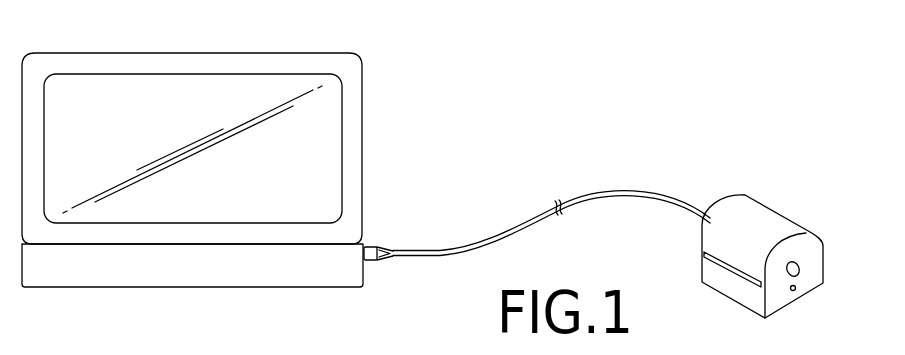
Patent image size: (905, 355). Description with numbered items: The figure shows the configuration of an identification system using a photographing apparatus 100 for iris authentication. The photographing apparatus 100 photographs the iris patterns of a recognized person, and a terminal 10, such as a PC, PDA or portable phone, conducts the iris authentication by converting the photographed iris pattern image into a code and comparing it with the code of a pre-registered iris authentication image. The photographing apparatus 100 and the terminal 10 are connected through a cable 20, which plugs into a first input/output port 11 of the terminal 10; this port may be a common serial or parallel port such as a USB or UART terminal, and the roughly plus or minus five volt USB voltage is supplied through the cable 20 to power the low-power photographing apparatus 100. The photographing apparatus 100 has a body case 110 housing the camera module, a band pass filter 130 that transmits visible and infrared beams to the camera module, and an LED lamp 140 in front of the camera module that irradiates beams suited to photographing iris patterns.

The terminal 10 is at (358, 58).
The first input/output port 11 is at (366, 246).
The cable 20 is at (593, 194).
The photographing apparatus for iris authentication 100 is at (794, 229).
The body case 110 is at (762, 212).
The band pass filter 130 is at (800, 265).
The LED lamp 140 is at (795, 290).